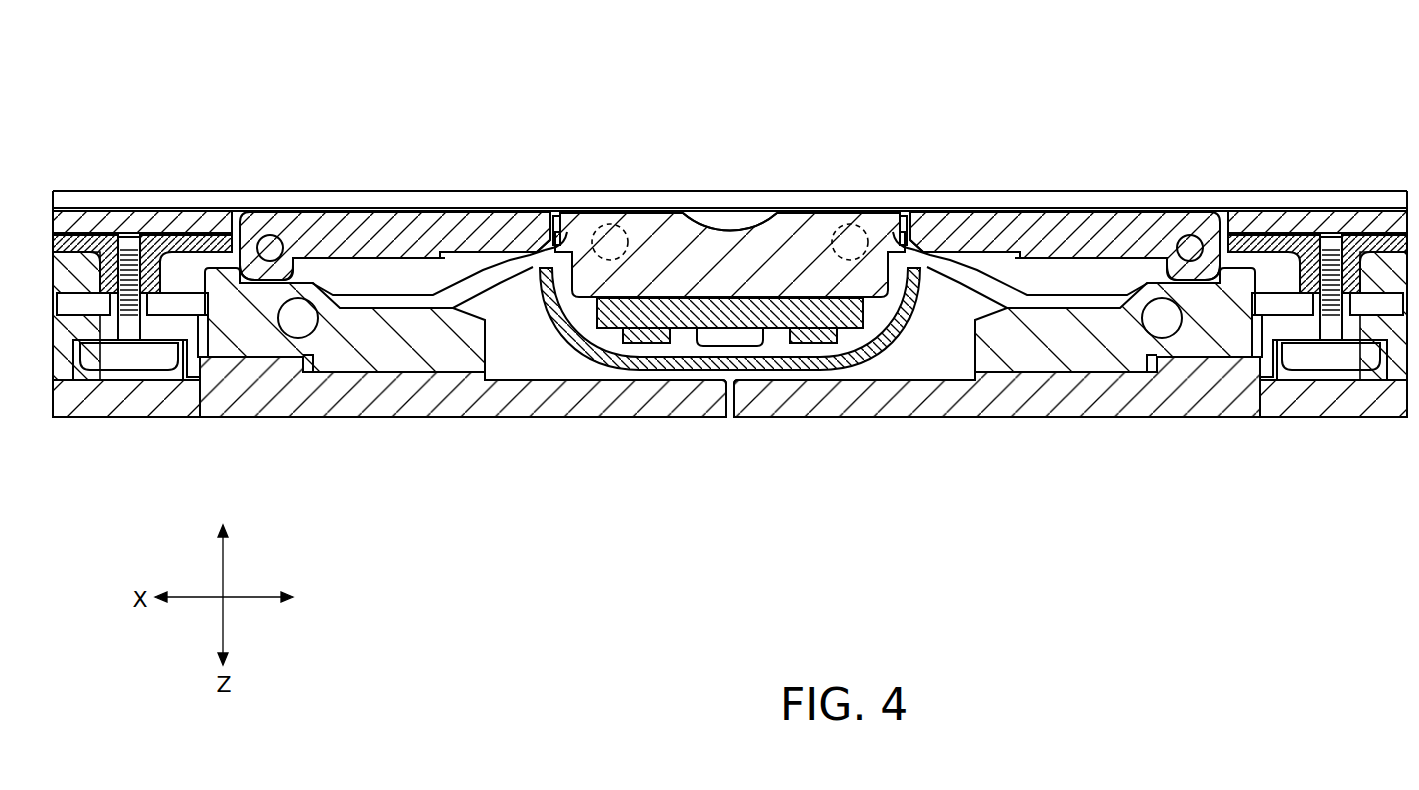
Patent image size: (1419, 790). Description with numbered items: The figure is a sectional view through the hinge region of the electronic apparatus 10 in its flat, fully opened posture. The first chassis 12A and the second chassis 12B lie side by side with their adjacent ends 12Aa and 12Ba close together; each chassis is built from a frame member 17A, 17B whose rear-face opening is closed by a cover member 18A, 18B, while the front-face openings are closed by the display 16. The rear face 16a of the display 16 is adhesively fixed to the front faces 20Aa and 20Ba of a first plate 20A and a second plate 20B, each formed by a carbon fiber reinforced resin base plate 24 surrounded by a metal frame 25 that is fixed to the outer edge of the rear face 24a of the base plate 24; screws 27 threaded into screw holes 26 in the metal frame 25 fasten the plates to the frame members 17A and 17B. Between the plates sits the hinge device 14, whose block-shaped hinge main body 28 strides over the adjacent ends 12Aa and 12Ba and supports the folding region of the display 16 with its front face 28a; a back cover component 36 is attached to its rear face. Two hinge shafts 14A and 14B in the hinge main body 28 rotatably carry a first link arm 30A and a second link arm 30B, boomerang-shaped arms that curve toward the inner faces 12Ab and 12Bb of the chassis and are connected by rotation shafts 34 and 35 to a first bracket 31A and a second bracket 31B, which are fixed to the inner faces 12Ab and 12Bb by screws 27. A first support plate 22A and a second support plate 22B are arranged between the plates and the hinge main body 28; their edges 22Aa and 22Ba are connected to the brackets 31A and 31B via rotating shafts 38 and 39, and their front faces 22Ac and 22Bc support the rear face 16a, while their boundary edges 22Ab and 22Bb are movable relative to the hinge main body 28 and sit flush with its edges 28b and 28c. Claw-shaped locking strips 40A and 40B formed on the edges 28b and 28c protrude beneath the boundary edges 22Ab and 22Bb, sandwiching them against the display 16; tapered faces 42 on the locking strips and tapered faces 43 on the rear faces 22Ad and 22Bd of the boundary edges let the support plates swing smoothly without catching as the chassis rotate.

The electronic apparatus 10 is at (59, 51).
The first chassis 12A is at (404, 450).
The adjacent end 12Aa is at (738, 400).
The inner face 12Ab is at (601, 398).
The second chassis 12B is at (1054, 450).
The adjacent end 12Ba is at (722, 388).
The inner face 12Bb is at (823, 376).
The hinge device 14 is at (563, 385).
The first hinge shaft 14A is at (620, 226).
The second hinge shaft 14B is at (840, 226).
The display 16 is at (300, 192).
The rear face 16a is at (465, 200).
The frame member 17A is at (485, 405).
The frame member 17B is at (977, 405).
The cover member 18A is at (116, 400).
The cover member 18B is at (1342, 400).
The first plate 20A is at (136, 128).
The front face 20Aa is at (203, 200).
The second plate 20B is at (1408, 128).
The front face 20Ba is at (1258, 200).
The first support plate 22A is at (392, 200).
The edge 22Aa is at (253, 204).
The boundary edge 22Ab is at (551, 200).
The front face 22Ac is at (346, 200).
The rear face 22Ad is at (437, 200).
The second support plate 22B is at (1060, 200).
The edge 22Ba is at (1208, 204).
The boundary edge 22Bb is at (910, 200).
The front face 22Bc is at (1030, 200).
The rear face 22Bd is at (1118, 200).
The base plate 24 is at (119, 200).
The rear face 24a is at (62, 400).
The metal frame 25 is at (80, 200).
The screw hole 26 is at (156, 204).
The screw 27 is at (145, 362).
The hinge main body 28 is at (773, 212).
The front face 28a is at (670, 212).
The edge 28b is at (579, 210).
The edge 28c is at (883, 210).
The first link arm 30A is at (483, 290).
The second link arm 30B is at (983, 290).
The first bracket 31A is at (358, 355).
The second bracket 31B is at (1107, 353).
The rotation shaft 34 is at (292, 330).
The rotation shaft 35 is at (1163, 330).
The back cover component 36 is at (653, 372).
The rotating shaft 38 is at (268, 236).
The rotating shaft 39 is at (1192, 236).
The first locking strip 40A is at (525, 282).
The second locking strip 40B is at (928, 272).
The tapered face 42 is at (556, 222).
The tapered face 43 is at (548, 230).